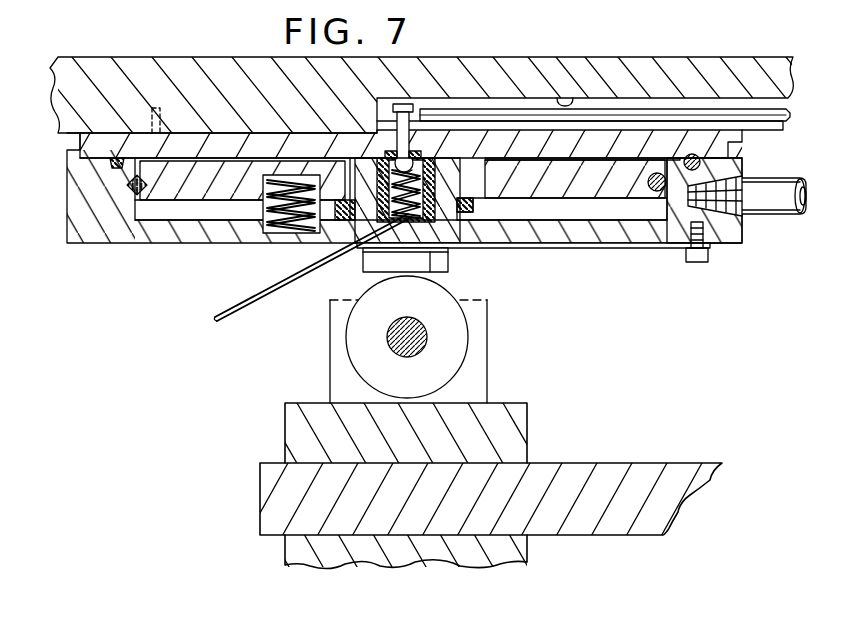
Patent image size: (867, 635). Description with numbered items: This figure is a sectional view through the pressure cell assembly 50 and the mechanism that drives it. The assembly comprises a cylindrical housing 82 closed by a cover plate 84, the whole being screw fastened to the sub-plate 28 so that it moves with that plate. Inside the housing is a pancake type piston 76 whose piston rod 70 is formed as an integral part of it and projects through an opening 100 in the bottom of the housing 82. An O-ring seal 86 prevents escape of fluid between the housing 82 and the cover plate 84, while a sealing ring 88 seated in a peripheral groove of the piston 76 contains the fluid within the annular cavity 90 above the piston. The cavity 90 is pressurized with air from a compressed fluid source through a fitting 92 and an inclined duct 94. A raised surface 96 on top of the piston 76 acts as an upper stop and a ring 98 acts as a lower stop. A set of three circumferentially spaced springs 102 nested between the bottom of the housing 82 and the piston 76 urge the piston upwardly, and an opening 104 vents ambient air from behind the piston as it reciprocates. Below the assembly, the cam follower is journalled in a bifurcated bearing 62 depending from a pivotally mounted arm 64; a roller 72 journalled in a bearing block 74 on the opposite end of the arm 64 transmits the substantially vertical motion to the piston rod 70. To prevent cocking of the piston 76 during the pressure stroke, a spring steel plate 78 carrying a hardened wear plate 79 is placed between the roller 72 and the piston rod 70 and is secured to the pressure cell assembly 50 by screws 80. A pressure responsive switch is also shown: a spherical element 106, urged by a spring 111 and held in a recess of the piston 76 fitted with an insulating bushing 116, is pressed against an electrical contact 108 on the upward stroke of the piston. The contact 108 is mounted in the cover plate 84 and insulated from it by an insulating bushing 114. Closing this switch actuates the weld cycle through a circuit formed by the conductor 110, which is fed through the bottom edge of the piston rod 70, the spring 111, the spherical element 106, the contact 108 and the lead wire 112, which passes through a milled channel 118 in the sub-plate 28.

The sub-plate 28 is at (442, 59).
The pressure cell assembly 50 is at (162, 246).
The bifurcated bearing 62 is at (530, 563).
The pivotally mounted arm 64 is at (606, 462).
The piston rod 70 is at (448, 252).
The roller 72 is at (462, 336).
The bearing block 74 is at (488, 370).
The pancake type piston 76 is at (582, 178).
The spring steel plate 78 is at (396, 264).
The hardened wear plate 79 is at (438, 264).
The screws 80 is at (700, 262).
The cylindrical housing 82 is at (730, 236).
The cover plate 84 is at (272, 132).
The O-ring seal 86 is at (112, 162).
The sealing ring 88 is at (134, 186).
The annular cavity 90 is at (228, 155).
The fitting 92 is at (740, 184).
The inclined duct 94 is at (674, 158).
The raised surface 96 is at (350, 158).
The ring 98 is at (476, 206).
The opening 100 is at (440, 246).
The springs 102 is at (262, 186).
The opening 104 is at (290, 235).
The spherical element 106 is at (389, 170).
The electrical contact 108 is at (414, 160).
The conductor 110 is at (252, 300).
The spring 111 is at (428, 182).
The lead wire 112 is at (488, 109).
The insulating bushing 114 is at (398, 132).
The insulating bushing 116 is at (508, 194).
The milled channel 118 is at (571, 98).